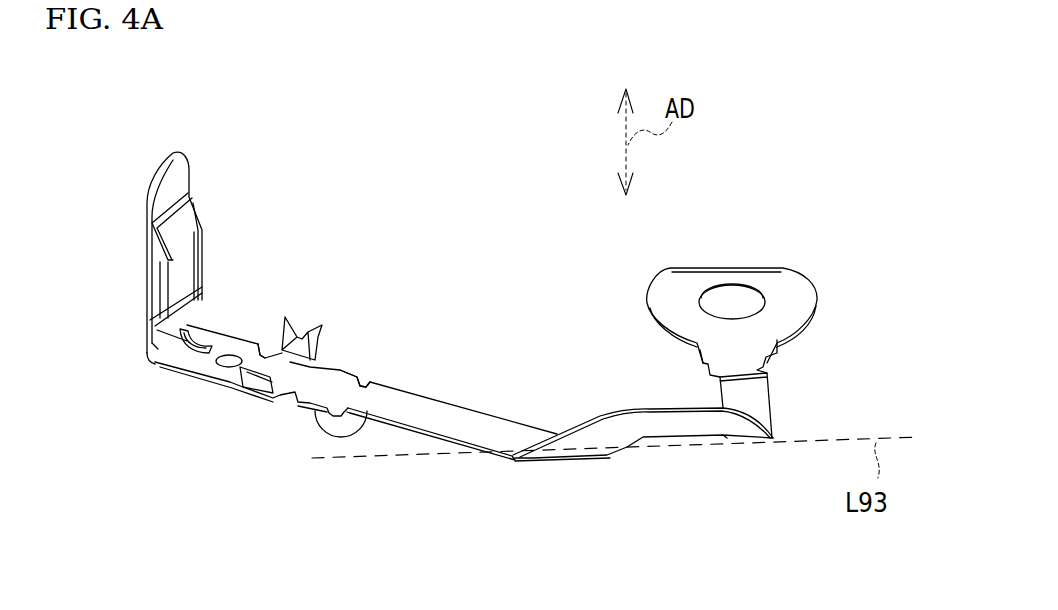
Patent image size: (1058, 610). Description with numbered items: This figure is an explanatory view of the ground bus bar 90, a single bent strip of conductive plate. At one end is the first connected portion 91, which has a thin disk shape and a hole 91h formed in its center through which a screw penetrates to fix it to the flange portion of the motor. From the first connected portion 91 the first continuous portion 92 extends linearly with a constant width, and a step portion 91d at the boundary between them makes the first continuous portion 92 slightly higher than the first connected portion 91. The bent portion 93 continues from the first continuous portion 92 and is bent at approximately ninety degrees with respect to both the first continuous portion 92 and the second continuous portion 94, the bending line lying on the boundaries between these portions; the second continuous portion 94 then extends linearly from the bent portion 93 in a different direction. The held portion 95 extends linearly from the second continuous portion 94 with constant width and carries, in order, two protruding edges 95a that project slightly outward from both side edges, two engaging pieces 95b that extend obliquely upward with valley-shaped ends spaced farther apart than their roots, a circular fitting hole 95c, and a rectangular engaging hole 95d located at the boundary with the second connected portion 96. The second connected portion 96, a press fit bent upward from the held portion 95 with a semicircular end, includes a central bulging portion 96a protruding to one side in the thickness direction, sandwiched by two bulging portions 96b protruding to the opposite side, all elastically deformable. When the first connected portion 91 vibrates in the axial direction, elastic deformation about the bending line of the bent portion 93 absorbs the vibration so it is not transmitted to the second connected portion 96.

The ground bus bar 90 is at (819, 181).
The first connected portion 91 is at (787, 282).
The hole 91h is at (720, 300).
The step portion 91d is at (765, 368).
The first continuous portion 92 is at (765, 392).
The bent portion 93 is at (643, 427).
The second continuous portion 94 is at (463, 420).
The held portion 95 is at (274, 425).
The protruding edges 95a is at (352, 373).
The engaging pieces 95b is at (322, 326).
The fitting hole 95c is at (237, 345).
The engaging hole 95d is at (186, 372).
The second connected portion 96 is at (226, 155).
The bulging portion 96a is at (148, 253).
The bulging portions 96b is at (203, 270).